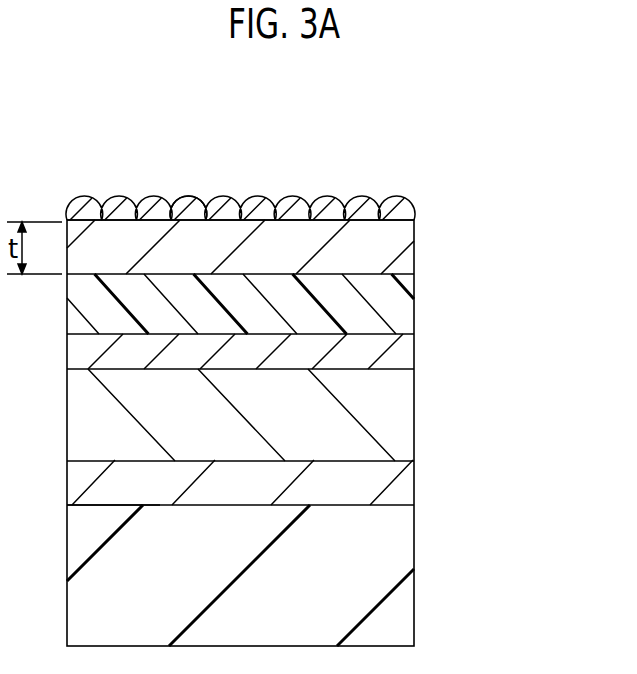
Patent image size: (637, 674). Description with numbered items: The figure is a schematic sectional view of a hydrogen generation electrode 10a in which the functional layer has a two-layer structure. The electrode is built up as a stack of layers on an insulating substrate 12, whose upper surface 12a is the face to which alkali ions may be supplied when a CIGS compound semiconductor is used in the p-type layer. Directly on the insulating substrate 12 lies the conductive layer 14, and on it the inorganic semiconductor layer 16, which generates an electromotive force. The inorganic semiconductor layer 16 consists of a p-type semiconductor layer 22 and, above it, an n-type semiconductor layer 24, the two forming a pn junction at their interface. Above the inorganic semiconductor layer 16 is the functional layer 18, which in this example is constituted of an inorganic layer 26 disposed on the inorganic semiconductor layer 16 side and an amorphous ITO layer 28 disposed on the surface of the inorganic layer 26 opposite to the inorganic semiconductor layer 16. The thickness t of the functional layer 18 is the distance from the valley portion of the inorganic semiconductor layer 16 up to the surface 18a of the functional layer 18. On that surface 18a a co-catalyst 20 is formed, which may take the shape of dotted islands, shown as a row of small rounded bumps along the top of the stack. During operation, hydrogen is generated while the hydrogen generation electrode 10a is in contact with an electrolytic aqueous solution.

The hydrogen generation electrode 10a is at (427, 143).
The insulating substrate 12 is at (404, 558).
The surface of insulating substrate 12a is at (98, 505).
The conductive layer 14 is at (404, 485).
The inorganic semiconductor layer 16 is at (312, 396).
The functional layer 18 is at (308, 277).
The surface of functional layer 18a is at (192, 215).
The co-catalyst 20 is at (402, 212).
The p-type semiconductor layer 22 is at (283, 415).
The n-type semiconductor layer 24 is at (403, 357).
The inorganic layer 26 is at (280, 304).
The amorphous ITO layer 28 is at (392, 245).